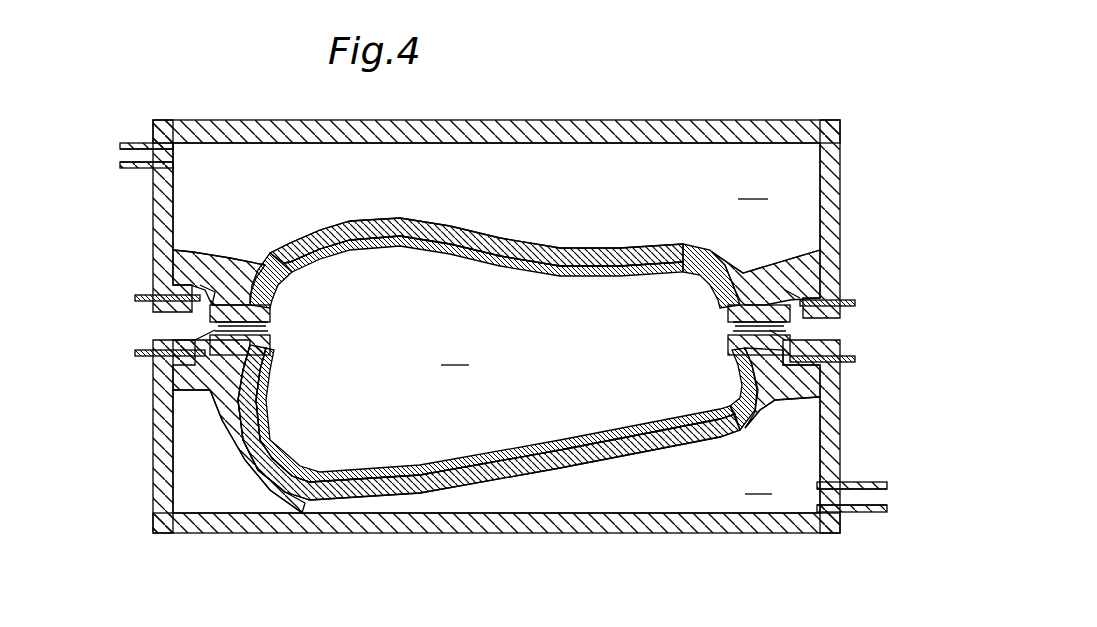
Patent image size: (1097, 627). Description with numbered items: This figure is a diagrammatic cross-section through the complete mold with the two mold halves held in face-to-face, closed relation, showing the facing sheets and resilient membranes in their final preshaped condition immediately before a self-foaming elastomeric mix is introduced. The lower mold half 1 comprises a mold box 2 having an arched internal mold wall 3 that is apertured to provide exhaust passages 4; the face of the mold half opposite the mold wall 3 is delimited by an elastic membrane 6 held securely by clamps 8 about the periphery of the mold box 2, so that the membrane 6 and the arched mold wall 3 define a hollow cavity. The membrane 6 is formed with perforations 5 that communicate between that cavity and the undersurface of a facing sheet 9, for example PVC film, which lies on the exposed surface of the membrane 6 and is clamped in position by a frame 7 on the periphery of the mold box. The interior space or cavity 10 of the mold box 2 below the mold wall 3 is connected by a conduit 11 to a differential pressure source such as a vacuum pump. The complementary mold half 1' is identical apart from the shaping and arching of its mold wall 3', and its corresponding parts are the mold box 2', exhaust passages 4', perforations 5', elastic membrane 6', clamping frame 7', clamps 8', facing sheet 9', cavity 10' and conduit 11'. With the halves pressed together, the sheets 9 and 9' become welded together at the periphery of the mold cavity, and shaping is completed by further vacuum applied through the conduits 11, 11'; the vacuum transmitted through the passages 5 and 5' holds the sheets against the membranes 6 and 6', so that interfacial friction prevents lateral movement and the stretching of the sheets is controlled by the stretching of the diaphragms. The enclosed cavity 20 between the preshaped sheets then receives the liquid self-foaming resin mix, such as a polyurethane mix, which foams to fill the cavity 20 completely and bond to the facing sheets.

The mold half 1 is at (509, 455).
The complementary mold half 1' is at (499, 197).
The mold box 2 is at (496, 540).
The mold box 2' is at (496, 109).
The internal mold wall 3 is at (468, 427).
The internal mold wall 3' is at (495, 289).
The exhaust passages 4 is at (459, 427).
The exhaust passages 4' is at (481, 222).
The perforations 5 is at (506, 415).
The perforations 5' is at (495, 320).
The elastic membrane 6 is at (489, 427).
The elastic membrane 6' is at (476, 213).
The clamping frame 7 is at (493, 342).
The clamping frame 7' is at (506, 313).
The clamps 8 is at (510, 343).
The clamps 8' is at (500, 324).
The facing sheet 9 is at (495, 415).
The facing sheet 9' is at (483, 270).
The interior space or cavity 10 is at (496, 451).
The interior space or cavity 10' is at (496, 208).
The conduit 11 is at (852, 473).
The conduit 11' is at (146, 129).
The cavity 20 is at (455, 352).